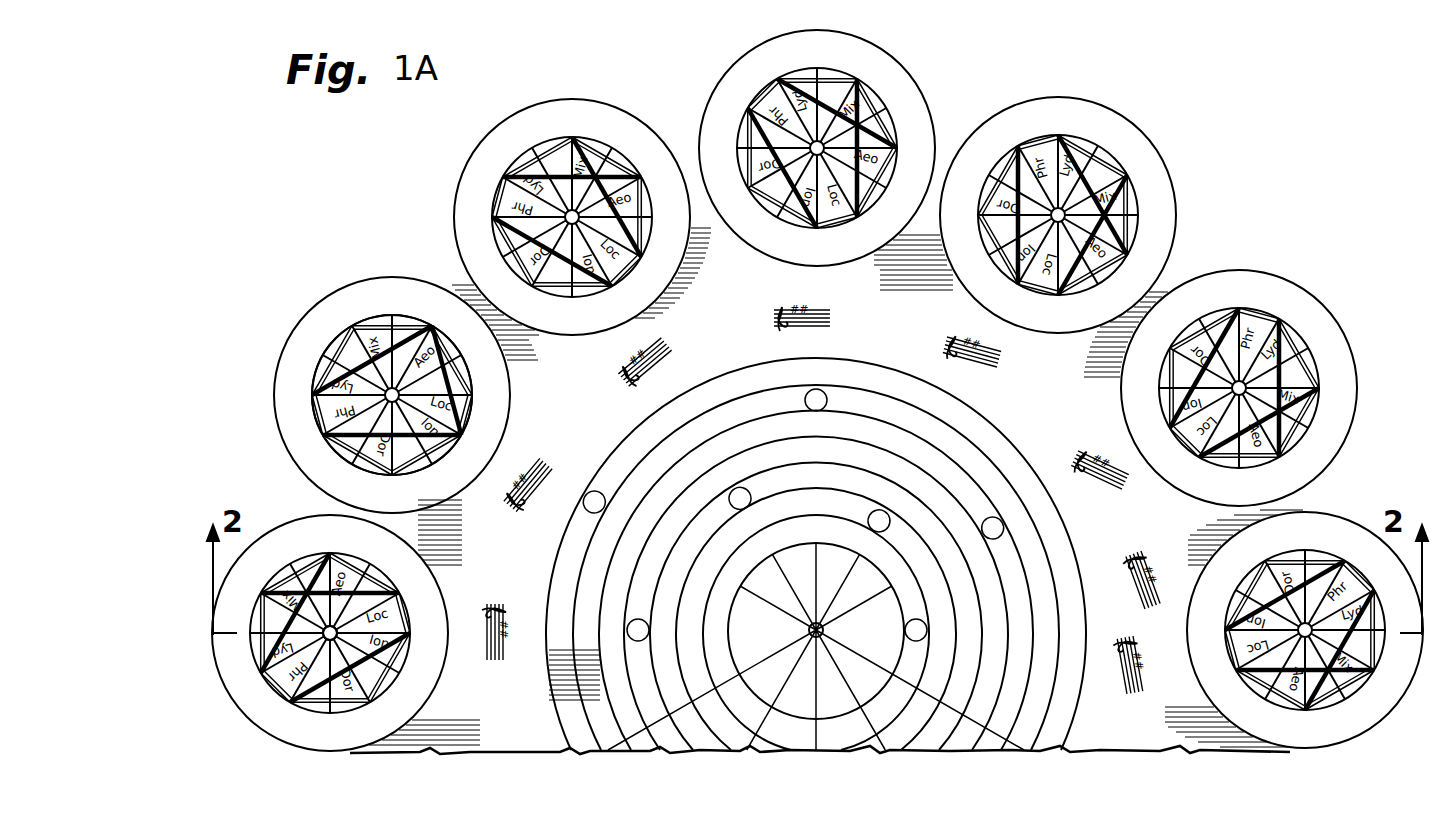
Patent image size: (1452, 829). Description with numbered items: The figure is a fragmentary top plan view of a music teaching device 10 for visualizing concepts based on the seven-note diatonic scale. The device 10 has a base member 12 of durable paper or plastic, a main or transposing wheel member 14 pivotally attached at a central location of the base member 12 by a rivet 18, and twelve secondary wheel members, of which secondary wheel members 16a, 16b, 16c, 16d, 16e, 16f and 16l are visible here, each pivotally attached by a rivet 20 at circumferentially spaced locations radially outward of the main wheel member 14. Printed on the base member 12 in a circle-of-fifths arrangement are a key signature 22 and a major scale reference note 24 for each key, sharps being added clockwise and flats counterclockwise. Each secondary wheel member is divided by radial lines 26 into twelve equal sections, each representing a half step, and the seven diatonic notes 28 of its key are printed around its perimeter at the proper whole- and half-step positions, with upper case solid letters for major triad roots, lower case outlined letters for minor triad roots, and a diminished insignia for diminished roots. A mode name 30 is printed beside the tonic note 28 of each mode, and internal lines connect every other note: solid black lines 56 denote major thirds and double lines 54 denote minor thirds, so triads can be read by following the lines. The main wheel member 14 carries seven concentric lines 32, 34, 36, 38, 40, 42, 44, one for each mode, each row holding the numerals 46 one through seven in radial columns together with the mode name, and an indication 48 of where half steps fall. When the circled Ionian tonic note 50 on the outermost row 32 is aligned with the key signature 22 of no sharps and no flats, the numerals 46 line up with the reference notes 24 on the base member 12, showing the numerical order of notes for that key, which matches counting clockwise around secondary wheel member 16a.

The device 10 is at (976, 98).
The base member 12 is at (1160, 300).
The main wheel member 14 is at (797, 551).
The secondary wheel member 16a is at (392, 389).
The secondary wheel member 16b is at (479, 207).
The secondary wheel member 16c is at (600, 223).
The secondary wheel member 16d is at (1138, 133).
The secondary wheel member 16e is at (1330, 318).
The secondary wheel member 16f is at (1345, 520).
The secondary wheel member 16l is at (330, 619).
The rivet 18 is at (820, 640).
The rivet 20 is at (302, 708).
The key signature 22 is at (495, 660).
The major scale reference note 24 is at (520, 660).
The radial lines 26 is at (454, 212).
The notes 28 is at (530, 194).
The mode name 30 is at (405, 430).
The outermost concentric line 32 is at (588, 752).
The concentric line 34 is at (620, 752).
The concentric line 36 is at (652, 752).
The concentric line 38 is at (690, 752).
The concentric line 40 is at (722, 752).
The concentric line 42 is at (760, 752).
The concentric line 44 is at (798, 740).
The numerals 46 is at (757, 467).
The half-step interval indication 48 is at (815, 502).
The Ionian tonic note 50 is at (765, 515).
The double lines 54 is at (577, 224).
The solid black lines 56 is at (604, 217).